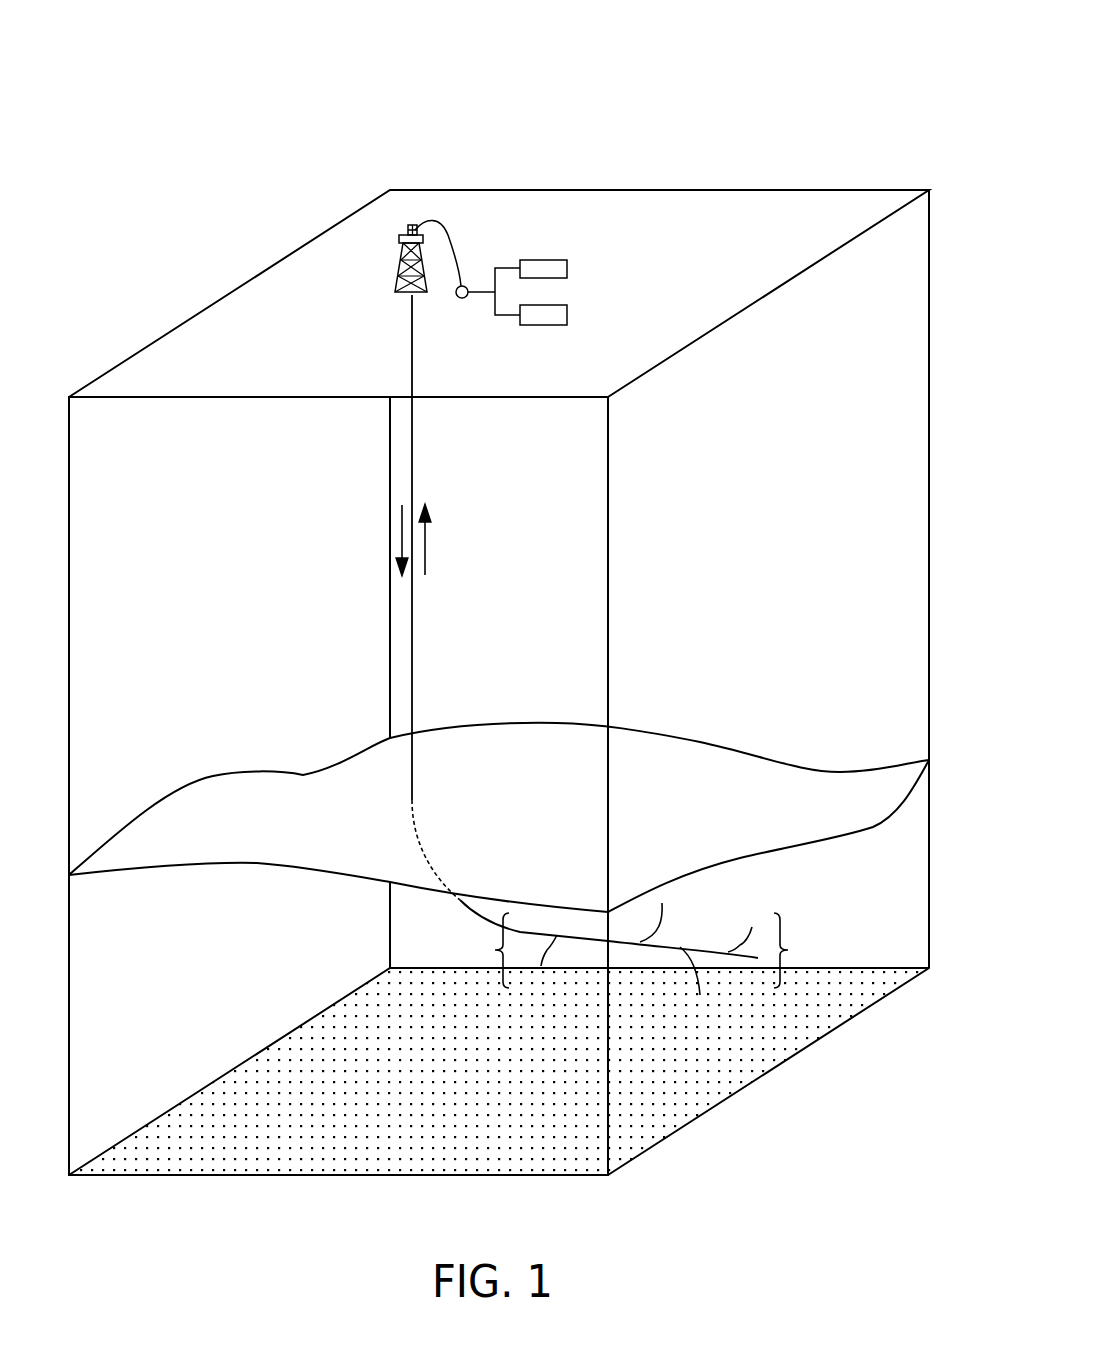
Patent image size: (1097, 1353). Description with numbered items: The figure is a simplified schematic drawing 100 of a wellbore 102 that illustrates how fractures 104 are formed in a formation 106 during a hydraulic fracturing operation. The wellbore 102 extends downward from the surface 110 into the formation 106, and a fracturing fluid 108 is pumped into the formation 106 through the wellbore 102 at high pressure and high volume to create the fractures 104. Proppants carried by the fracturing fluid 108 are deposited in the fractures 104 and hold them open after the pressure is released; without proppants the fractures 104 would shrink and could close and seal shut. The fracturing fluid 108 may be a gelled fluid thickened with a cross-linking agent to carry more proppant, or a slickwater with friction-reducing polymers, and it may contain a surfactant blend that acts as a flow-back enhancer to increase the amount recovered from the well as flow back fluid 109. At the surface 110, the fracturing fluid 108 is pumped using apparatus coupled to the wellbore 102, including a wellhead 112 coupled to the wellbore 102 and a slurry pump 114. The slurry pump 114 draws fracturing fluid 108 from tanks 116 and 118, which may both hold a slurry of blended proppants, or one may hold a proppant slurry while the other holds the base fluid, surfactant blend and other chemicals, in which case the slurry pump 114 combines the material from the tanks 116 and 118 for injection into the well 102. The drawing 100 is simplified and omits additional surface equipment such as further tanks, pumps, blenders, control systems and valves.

The schematic drawing 100 is at (773, 82).
The wellbore 102 is at (413, 632).
The fractures 104 is at (788, 950).
The formation 106 is at (88, 880).
The fracturing fluid 108 is at (401, 530).
The flow back fluid 109 is at (426, 542).
The surface 110 is at (248, 310).
The wellhead 112 is at (405, 237).
The slurry pump 114 is at (464, 286).
The tank 116 is at (550, 260).
The tank 118 is at (557, 325).